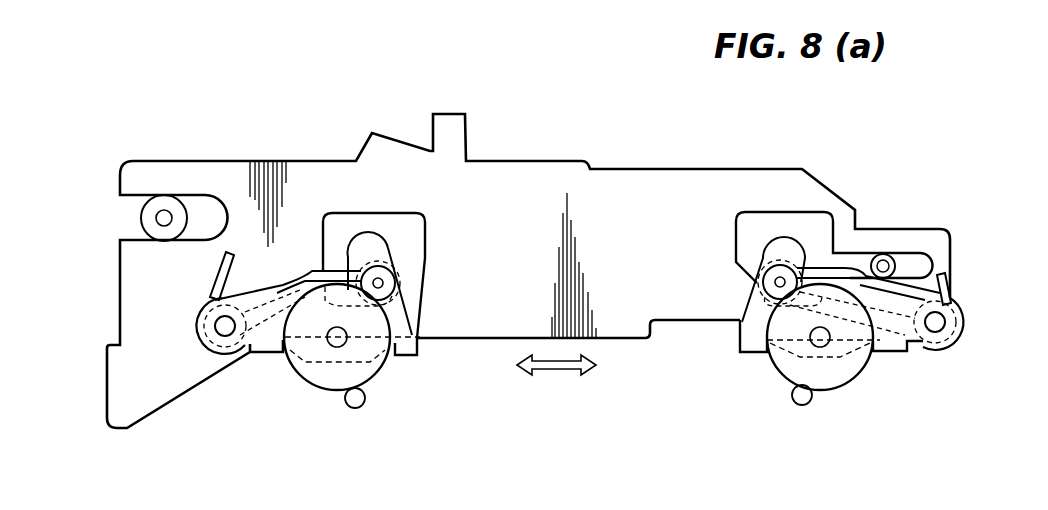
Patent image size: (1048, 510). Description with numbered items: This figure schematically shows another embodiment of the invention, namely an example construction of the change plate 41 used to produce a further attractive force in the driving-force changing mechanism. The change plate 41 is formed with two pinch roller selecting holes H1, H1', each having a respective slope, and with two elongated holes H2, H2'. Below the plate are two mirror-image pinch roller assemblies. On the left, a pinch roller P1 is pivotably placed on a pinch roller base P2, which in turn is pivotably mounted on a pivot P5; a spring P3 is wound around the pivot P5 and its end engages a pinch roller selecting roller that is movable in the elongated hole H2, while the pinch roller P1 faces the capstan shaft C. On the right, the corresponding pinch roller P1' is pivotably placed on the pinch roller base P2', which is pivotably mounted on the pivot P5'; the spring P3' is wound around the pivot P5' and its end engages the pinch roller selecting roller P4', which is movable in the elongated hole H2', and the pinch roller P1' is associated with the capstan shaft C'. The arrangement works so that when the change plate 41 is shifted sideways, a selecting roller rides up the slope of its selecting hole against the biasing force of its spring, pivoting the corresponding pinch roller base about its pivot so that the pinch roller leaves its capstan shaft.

The change plate 41 is at (630, 188).
The pinch roller selecting hole H1 is at (396, 275).
The elongated hole H2 is at (397, 283).
The pinch roller P1 is at (349, 365).
The pinch roller base P2 is at (426, 362).
The spring P3 is at (262, 293).
The pivot P5 is at (221, 371).
The capstan shaft C is at (360, 420).
The pinch roller selecting hole H1' is at (815, 233).
The elongated hole H2' is at (773, 246).
The pinch roller P1' is at (823, 369).
The pinch roller base P2' is at (736, 363).
The spring P3' is at (905, 301).
The pinch roller selecting roller P4' is at (754, 283).
The pivot P5' is at (947, 328).
The capstan shaft C' is at (781, 413).